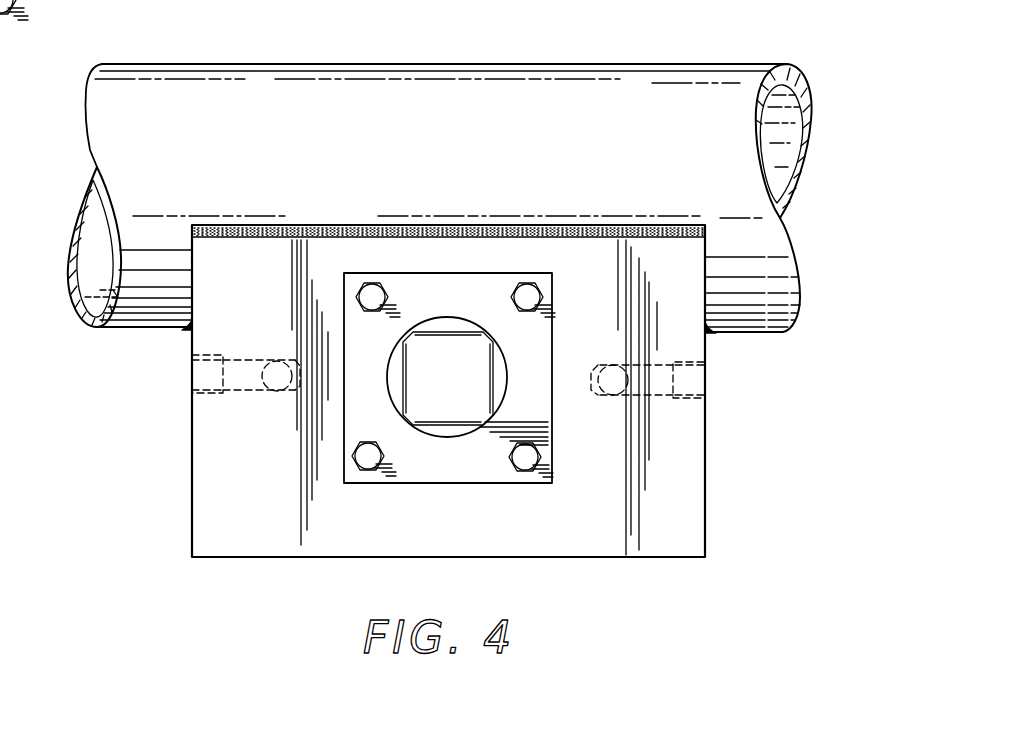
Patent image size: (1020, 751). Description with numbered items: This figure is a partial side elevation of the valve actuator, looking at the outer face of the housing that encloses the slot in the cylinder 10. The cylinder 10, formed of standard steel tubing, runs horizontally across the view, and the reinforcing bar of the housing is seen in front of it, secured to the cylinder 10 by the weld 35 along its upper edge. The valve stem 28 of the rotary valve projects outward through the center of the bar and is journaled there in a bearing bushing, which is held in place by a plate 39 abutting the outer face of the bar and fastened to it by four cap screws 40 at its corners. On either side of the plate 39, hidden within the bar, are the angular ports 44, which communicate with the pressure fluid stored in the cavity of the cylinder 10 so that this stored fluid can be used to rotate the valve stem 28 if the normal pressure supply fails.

The cylinder 10 is at (676, 75).
The weld 35 is at (521, 233).
The plate 39 is at (452, 478).
The cap screw 40 is at (375, 293).
The valve stem 28 is at (485, 353).
The angular port 44 is at (234, 392).